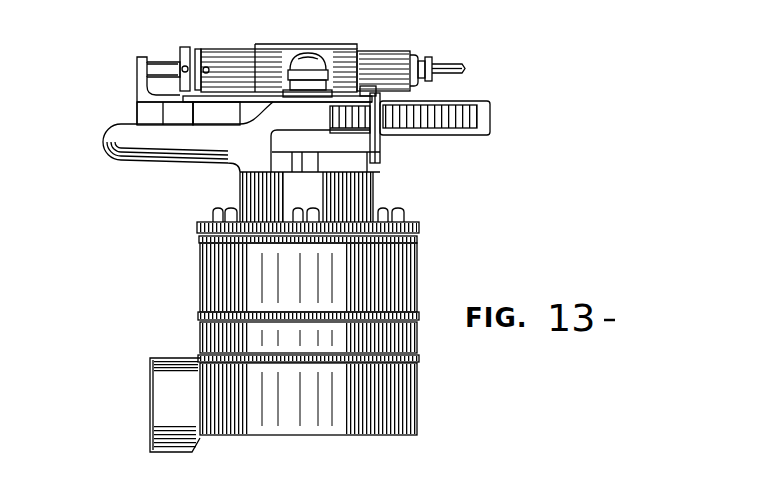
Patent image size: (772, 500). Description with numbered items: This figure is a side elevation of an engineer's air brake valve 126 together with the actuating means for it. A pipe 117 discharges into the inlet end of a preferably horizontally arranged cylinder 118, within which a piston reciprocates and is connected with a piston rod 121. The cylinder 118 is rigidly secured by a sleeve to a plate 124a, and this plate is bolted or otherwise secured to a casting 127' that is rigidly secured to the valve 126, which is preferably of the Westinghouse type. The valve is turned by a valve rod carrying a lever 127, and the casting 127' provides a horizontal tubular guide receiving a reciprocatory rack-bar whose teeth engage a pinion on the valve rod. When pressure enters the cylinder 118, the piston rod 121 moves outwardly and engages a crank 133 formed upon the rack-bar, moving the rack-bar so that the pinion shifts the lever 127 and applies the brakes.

The pipe 117 is at (458, 73).
The cylinder 118 is at (432, 41).
The piston rod 121 is at (146, 89).
The plate 124a is at (258, 97).
The engineer's air brake valve 126 is at (417, 268).
The lever 127 is at (188, 152).
The casting 127' is at (199, 68).
The crank 133 is at (147, 103).